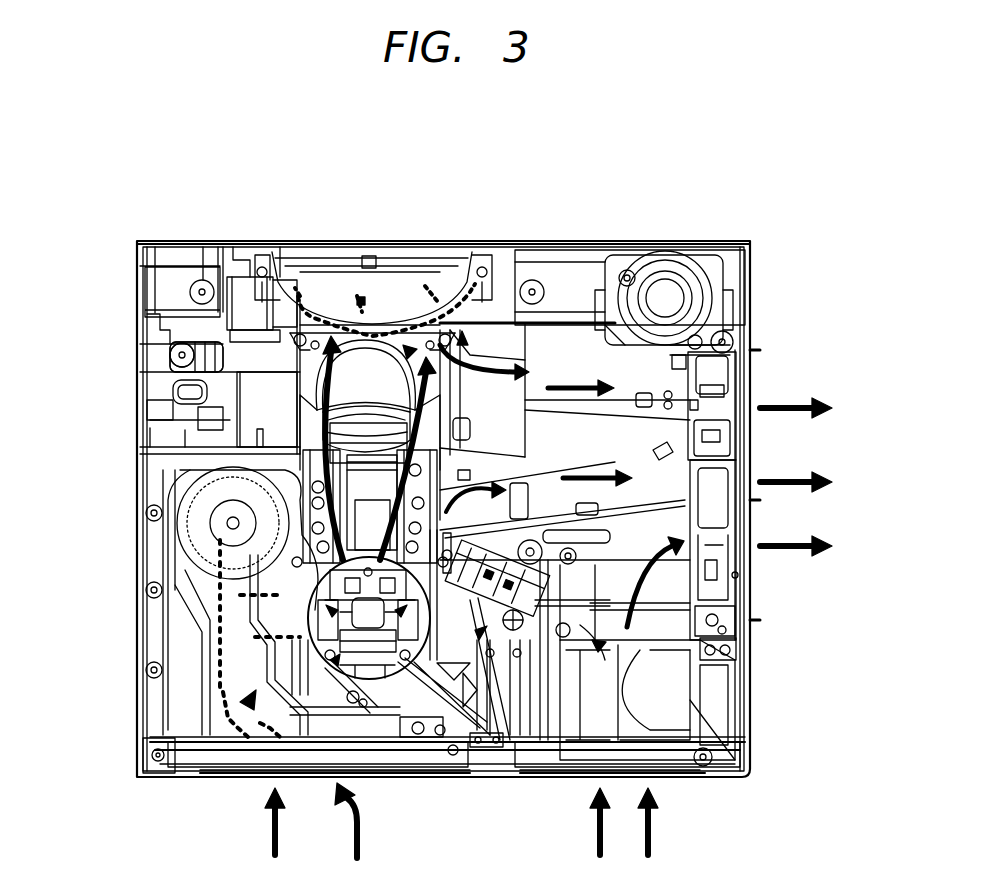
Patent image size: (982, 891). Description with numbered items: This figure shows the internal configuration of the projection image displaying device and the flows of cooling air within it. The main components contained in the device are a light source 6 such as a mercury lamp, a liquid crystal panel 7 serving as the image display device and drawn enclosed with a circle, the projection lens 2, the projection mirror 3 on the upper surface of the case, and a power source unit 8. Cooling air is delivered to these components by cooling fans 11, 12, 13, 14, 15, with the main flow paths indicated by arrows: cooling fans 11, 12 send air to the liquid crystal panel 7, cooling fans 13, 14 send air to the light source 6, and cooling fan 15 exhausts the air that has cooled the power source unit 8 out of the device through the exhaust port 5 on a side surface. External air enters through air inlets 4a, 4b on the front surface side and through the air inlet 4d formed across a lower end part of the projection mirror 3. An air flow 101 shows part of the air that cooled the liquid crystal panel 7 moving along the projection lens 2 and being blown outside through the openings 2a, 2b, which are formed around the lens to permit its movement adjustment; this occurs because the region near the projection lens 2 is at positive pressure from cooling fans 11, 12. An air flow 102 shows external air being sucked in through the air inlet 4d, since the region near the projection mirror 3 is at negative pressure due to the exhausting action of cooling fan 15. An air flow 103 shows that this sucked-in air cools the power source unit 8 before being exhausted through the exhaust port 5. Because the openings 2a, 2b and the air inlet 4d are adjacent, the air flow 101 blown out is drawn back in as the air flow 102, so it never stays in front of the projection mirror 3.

The projection lens 2 is at (240, 405).
The opening 2a is at (298, 417).
The opening 2b is at (366, 434).
The projection mirror 3 is at (422, 280).
The air inlet 4a is at (257, 780).
The air inlet 4b is at (650, 770).
The air inlet 4d is at (345, 305).
The exhaust port 5 is at (753, 457).
The light source 6 is at (663, 690).
The liquid crystal panel 7 is at (384, 632).
The power source unit 8 is at (567, 357).
The cooling fan 11 is at (212, 515).
The cooling fan 12 is at (237, 680).
The cooling fan 13 is at (490, 567).
The cooling fan 14 is at (720, 528).
The cooling fan 15 is at (717, 393).
The air flow 101 is at (317, 367).
The air flow 102 is at (363, 308).
The air flow 103 is at (472, 360).